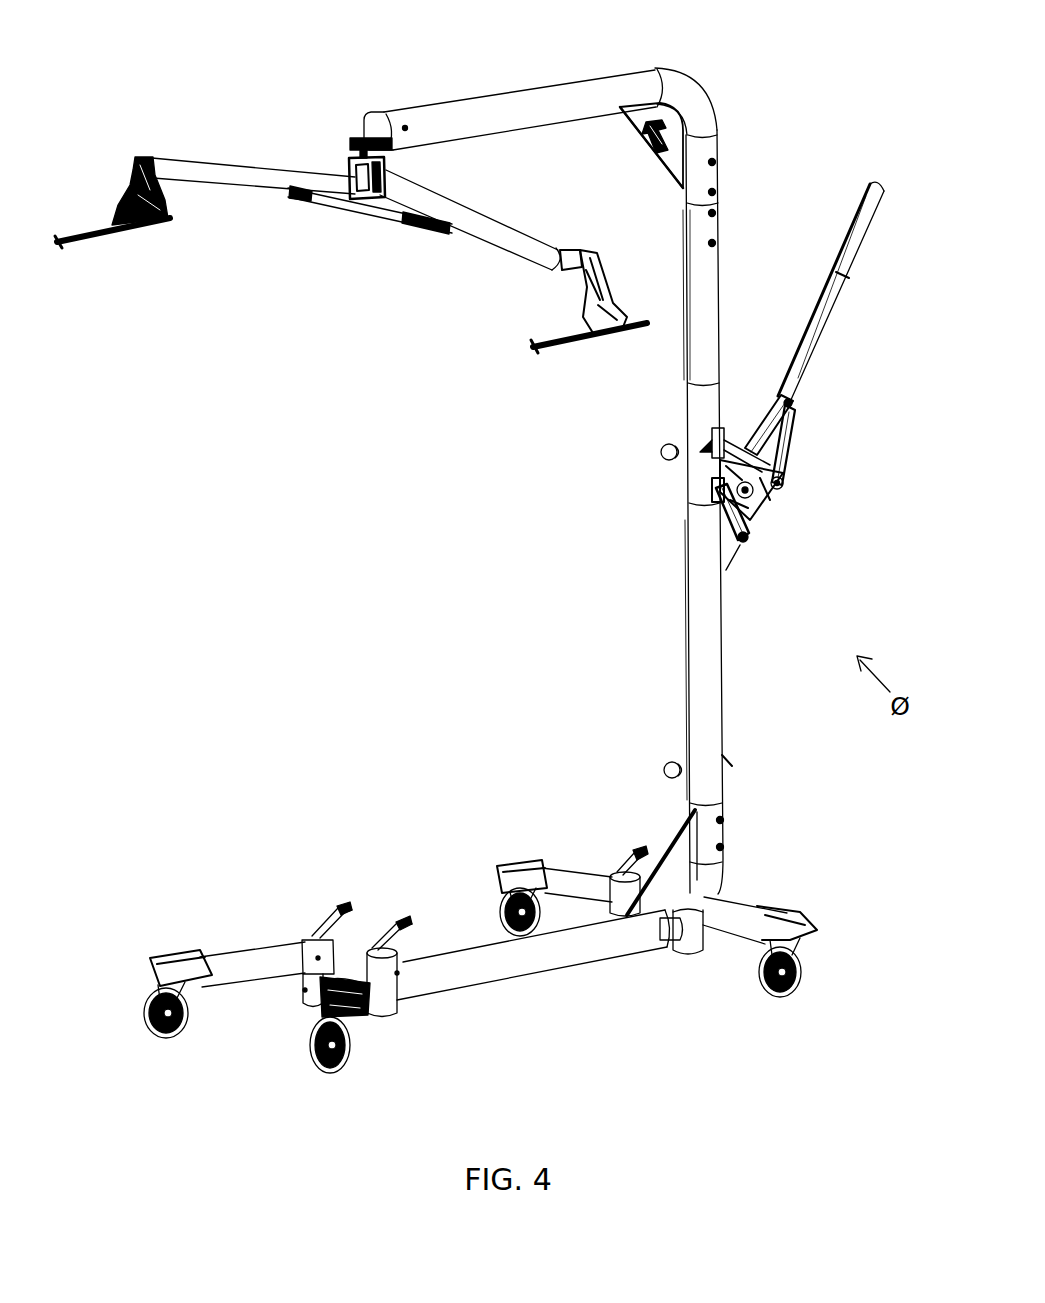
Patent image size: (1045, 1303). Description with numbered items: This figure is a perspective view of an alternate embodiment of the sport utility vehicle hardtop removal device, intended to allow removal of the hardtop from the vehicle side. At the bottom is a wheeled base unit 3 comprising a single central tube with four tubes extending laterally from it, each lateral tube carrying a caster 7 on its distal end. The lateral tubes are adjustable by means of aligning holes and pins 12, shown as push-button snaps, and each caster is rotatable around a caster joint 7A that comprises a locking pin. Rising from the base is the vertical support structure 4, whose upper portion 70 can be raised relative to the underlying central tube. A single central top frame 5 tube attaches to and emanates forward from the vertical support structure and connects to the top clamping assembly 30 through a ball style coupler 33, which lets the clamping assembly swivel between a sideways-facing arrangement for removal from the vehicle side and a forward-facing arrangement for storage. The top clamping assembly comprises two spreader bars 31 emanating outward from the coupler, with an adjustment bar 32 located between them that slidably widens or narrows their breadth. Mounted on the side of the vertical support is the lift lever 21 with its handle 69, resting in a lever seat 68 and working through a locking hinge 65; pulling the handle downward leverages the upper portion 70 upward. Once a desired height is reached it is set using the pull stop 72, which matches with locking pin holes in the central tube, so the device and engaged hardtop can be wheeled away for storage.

The wheeled base unit 3 is at (556, 958).
The vertical support structure 4 is at (684, 636).
The top frame 5 is at (540, 104).
The casters 7 is at (802, 985).
The caster joint with locking pin 7A is at (320, 938).
The aligning holes, pins 12 is at (716, 213).
The lift lever 21 is at (800, 391).
The top clamping assembly 30 is at (186, 138).
The spreader bars 31 is at (500, 232).
The adjustment bar 32 is at (125, 262).
The ball style coupler 33 is at (362, 140).
The locking hinge 65 is at (750, 545).
The lever seat 68 is at (770, 505).
The handle 69 is at (128, 190).
The upper portion of vertical support structure 70 is at (703, 298).
The pull stop 72 is at (661, 456).